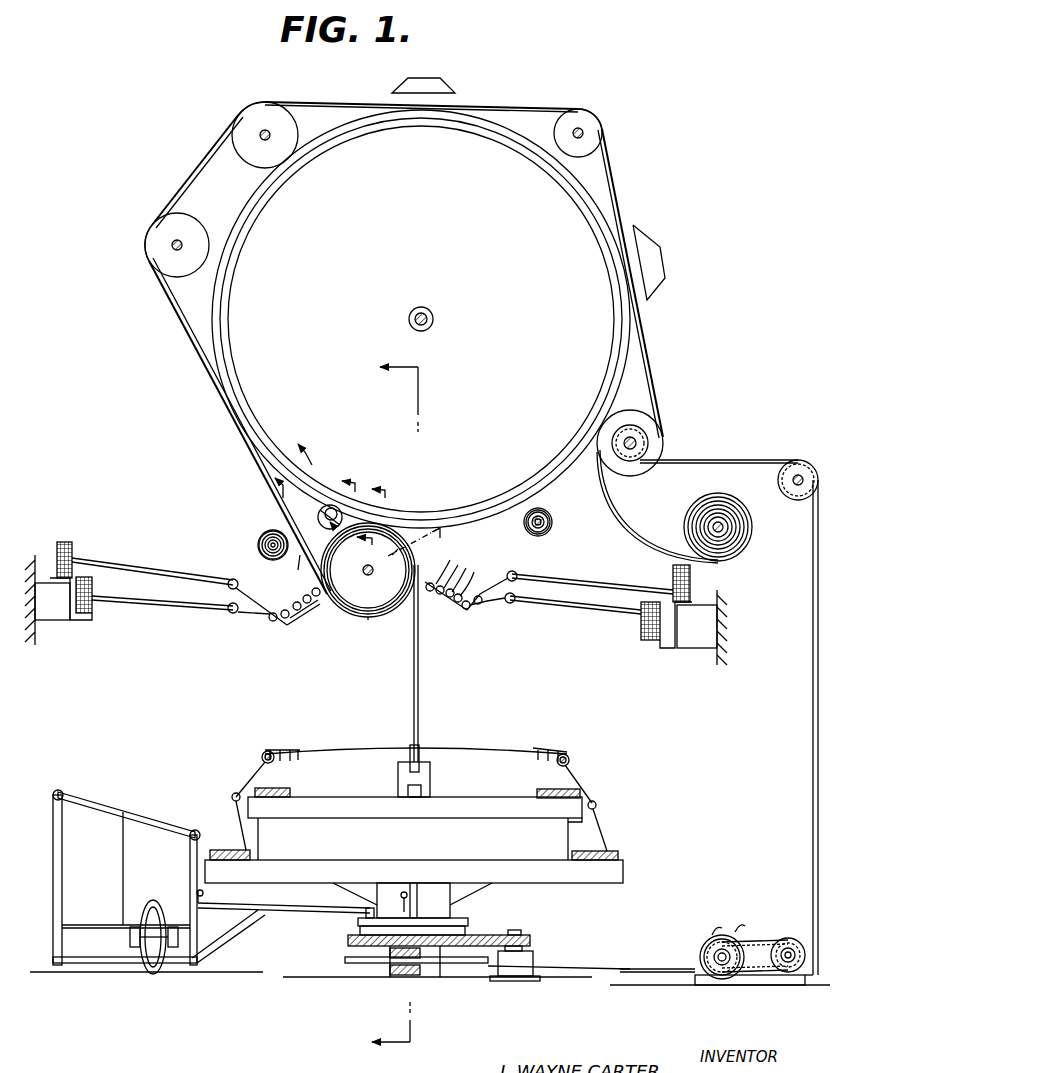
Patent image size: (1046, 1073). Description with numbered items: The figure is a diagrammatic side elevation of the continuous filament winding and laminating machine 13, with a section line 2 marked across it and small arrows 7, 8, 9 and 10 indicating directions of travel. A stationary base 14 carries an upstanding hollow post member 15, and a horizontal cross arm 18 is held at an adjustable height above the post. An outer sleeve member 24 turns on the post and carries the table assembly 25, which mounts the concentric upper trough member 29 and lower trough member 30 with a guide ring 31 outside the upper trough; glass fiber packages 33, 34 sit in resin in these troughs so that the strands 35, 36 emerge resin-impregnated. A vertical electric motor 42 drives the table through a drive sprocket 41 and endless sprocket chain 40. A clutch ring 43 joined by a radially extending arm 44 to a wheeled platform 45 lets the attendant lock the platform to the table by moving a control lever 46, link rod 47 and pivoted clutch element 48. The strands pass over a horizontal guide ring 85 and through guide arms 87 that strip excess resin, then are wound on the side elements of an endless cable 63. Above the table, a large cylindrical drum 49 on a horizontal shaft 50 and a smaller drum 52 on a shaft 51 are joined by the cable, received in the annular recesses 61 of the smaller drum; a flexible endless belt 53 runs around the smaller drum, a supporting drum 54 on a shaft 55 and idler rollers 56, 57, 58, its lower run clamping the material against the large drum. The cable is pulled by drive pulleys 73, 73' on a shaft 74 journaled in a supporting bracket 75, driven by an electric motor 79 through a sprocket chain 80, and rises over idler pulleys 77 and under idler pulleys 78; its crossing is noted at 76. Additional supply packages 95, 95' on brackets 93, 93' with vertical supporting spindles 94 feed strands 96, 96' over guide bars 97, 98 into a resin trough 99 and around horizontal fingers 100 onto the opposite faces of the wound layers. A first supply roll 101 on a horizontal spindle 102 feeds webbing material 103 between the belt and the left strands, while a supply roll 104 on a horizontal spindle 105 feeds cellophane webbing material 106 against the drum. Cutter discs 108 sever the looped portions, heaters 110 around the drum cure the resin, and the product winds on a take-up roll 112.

The section line 2- 2 is at (395, 704).
The direction arrow 7 is at (421, 540).
The direction arrow 8 is at (342, 506).
The direction arrow 9 is at (302, 480).
The direction arrow 10 is at (384, 517).
The continuous filament winding and laminating machine 13 is at (88, 998).
The stationary base 14 is at (345, 960).
The vertical hollow tubular post member 15 is at (398, 976).
The horizontal cross arm 18 is at (428, 765).
The outer sleeve member 24 is at (430, 780).
The table assembly 25 is at (596, 888).
The upper trough member 29 is at (445, 822).
The lower trough member 30 is at (623, 876).
The guide ring 31 is at (596, 803).
The glass fiber package 33 is at (540, 788).
The glass fiber package 34 is at (590, 850).
The glass fiber strand 35 is at (568, 787).
The glass fiber strand 36 is at (603, 840).
The endless sprocket chain 40 is at (500, 935).
The drive sprocket 41 is at (520, 930).
The vertical electric motor 42 is at (530, 960).
The clutch ring 43 is at (462, 922).
The radially extending arm 44 is at (260, 928).
The wheeled platform 45 is at (120, 975).
The control lever 46 is at (205, 893).
The link rod 47 is at (284, 898).
The pivoted clutch element 48 is at (364, 908).
The large cylindrical drum 49 is at (425, 216).
The horizontal shaft 50 is at (430, 312).
The shaft 51 is at (372, 575).
The smaller drum 52 is at (372, 612).
The flexible endless belt 53 is at (212, 342).
The supporting drum 54 is at (656, 438).
The shaft 55 is at (630, 437).
The idler roller 56 is at (181, 222).
The idler roller 57 is at (288, 128).
The idler roller 58 is at (557, 125).
The annular recess 61 is at (368, 570).
The endless cable 63 is at (812, 660).
The drive pulley 73 is at (786, 923).
The drive pulley 73' is at (702, 943).
The shaft 74 is at (805, 972).
The supporting bracket 75 is at (760, 985).
The cable crossing 76 is at (655, 968).
The idler pulley 77 is at (796, 500).
The idler pulley 78 is at (632, 465).
The electric motor 79 is at (710, 940).
The sprocket chain 80 is at (750, 942).
The horizontal guide ring 85 is at (266, 750).
The guide arm 87 is at (295, 748).
The bracket 93 is at (693, 647).
The bracket 93' is at (58, 613).
The vertical supporting spindle 94 is at (62, 540).
The additional supply package 95 is at (663, 618).
The additional supply package 95' is at (94, 562).
The strand 96 is at (576, 602).
The strand 96' is at (196, 578).
The guide bar 97 is at (492, 580).
The guide bar 98 is at (480, 606).
The resin trough 99 is at (455, 610).
The horizontal finger 100 is at (452, 572).
The first supply roll 101 is at (260, 548).
The horizontal spindle 102 is at (268, 532).
The webbing material 103 is at (295, 575).
The supply roll 104 is at (550, 528).
The horizontal spindle 105 is at (546, 512).
The cellophane webbing material 106 is at (530, 533).
The cutter disc 108 is at (326, 506).
The heater 110 is at (408, 80).
The take-up roll 112 is at (722, 520).